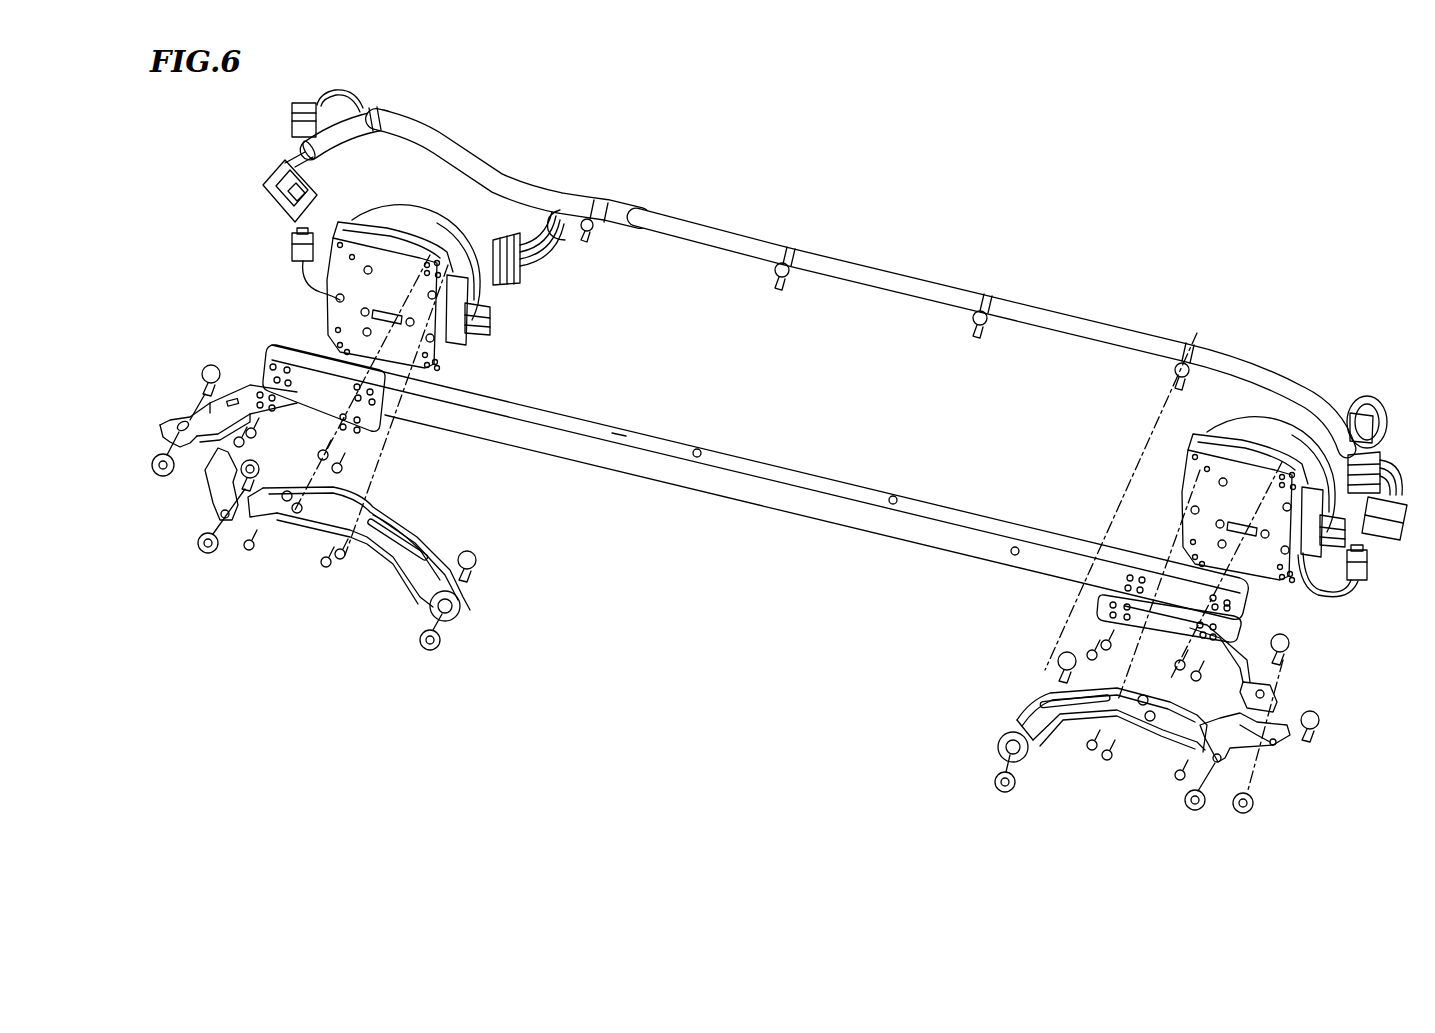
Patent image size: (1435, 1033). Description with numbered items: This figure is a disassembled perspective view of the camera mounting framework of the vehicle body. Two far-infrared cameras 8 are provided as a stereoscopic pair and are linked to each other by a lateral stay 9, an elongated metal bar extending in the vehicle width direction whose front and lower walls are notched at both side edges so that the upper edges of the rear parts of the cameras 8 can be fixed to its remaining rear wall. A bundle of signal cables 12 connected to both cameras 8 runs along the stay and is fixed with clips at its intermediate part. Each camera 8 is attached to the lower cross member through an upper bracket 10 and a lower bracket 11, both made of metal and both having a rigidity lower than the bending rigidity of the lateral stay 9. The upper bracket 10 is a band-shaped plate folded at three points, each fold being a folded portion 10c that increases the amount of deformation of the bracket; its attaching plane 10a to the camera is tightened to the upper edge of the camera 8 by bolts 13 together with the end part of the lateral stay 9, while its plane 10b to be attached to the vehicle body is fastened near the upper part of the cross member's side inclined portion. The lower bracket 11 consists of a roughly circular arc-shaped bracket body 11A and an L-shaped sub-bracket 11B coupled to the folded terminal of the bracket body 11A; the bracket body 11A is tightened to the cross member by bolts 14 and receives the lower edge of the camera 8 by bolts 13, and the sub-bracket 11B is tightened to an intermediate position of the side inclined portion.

The far-infrared camera 8 is at (438, 204).
The lateral stay 9 is at (757, 488).
The upper bracket 10 is at (238, 375).
The attaching plane to the camera 10a is at (383, 413).
The plane to be attached to the vehicle body 10b is at (172, 418).
The folded portion 10c is at (290, 385).
The lower bracket 11 is at (379, 560).
The bracket body 11A is at (400, 552).
The sub-bracket 11B is at (228, 522).
The signal cables 12 is at (945, 296).
The bolts 13 is at (252, 555).
The bolts 14 is at (203, 367).